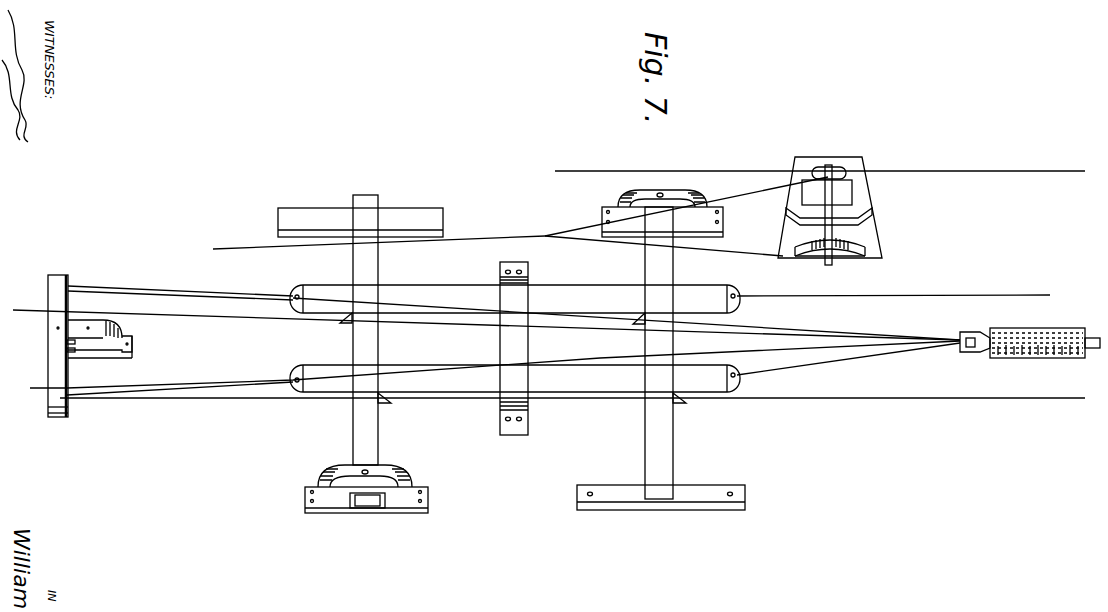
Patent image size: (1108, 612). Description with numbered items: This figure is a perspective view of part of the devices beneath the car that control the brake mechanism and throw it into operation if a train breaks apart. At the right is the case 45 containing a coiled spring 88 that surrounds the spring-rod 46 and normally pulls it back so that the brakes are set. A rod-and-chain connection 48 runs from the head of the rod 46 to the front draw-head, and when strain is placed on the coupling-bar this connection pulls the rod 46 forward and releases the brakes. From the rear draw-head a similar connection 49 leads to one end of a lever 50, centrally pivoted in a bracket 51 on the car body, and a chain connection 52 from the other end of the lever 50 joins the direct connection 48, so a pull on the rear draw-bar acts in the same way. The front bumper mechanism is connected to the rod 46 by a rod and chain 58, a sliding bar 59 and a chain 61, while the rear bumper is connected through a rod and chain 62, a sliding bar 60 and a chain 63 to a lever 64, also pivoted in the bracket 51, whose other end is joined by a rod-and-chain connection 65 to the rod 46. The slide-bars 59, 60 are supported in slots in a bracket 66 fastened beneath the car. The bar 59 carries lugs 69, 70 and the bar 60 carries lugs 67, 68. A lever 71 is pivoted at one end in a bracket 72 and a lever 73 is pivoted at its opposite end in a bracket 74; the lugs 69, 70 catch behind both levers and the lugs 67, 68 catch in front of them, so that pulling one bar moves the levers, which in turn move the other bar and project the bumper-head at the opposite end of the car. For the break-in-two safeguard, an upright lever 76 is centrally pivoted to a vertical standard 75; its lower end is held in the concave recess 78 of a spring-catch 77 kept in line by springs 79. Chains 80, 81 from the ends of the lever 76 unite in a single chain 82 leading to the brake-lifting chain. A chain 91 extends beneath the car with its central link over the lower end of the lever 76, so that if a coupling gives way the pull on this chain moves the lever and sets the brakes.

The case 45 is at (1036, 323).
The spring-rod 46 is at (982, 331).
The connection 48 is at (212, 312).
The connection 49 is at (866, 393).
The lever 50 is at (60, 290).
The bracket 51 is at (94, 339).
The chain connection 52 is at (84, 287).
The rod and chain 58 is at (188, 383).
The sliding bar 59 is at (515, 378).
The sliding bar 60 is at (515, 299).
The chain 61 is at (822, 362).
The rod and chain 62 is at (886, 297).
The chain 63 is at (112, 293).
The lever 64 is at (60, 414).
The rod-and-chain connection 65 is at (228, 384).
The bracket 66 is at (514, 348).
The catch or lug 67 is at (340, 320).
The catch or lug 68 is at (640, 320).
The catch or lug 69 is at (392, 404).
The catch or lug 70 is at (687, 404).
The lever 71 is at (365, 330).
The bracket or support 72 is at (366, 489).
The lever 73 is at (659, 353).
The bracket or support 74 is at (662, 213).
The vertical standard 75 is at (842, 156).
The upright lever 76 is at (833, 190).
The spring-catch 77 is at (866, 250).
The recess 78 is at (840, 252).
The springs 79 is at (835, 238).
The chain 80 is at (736, 196).
The chain 81 is at (746, 254).
The chain 82 is at (470, 240).
The spring 88 is at (1073, 350).
The chain 91 is at (700, 171).